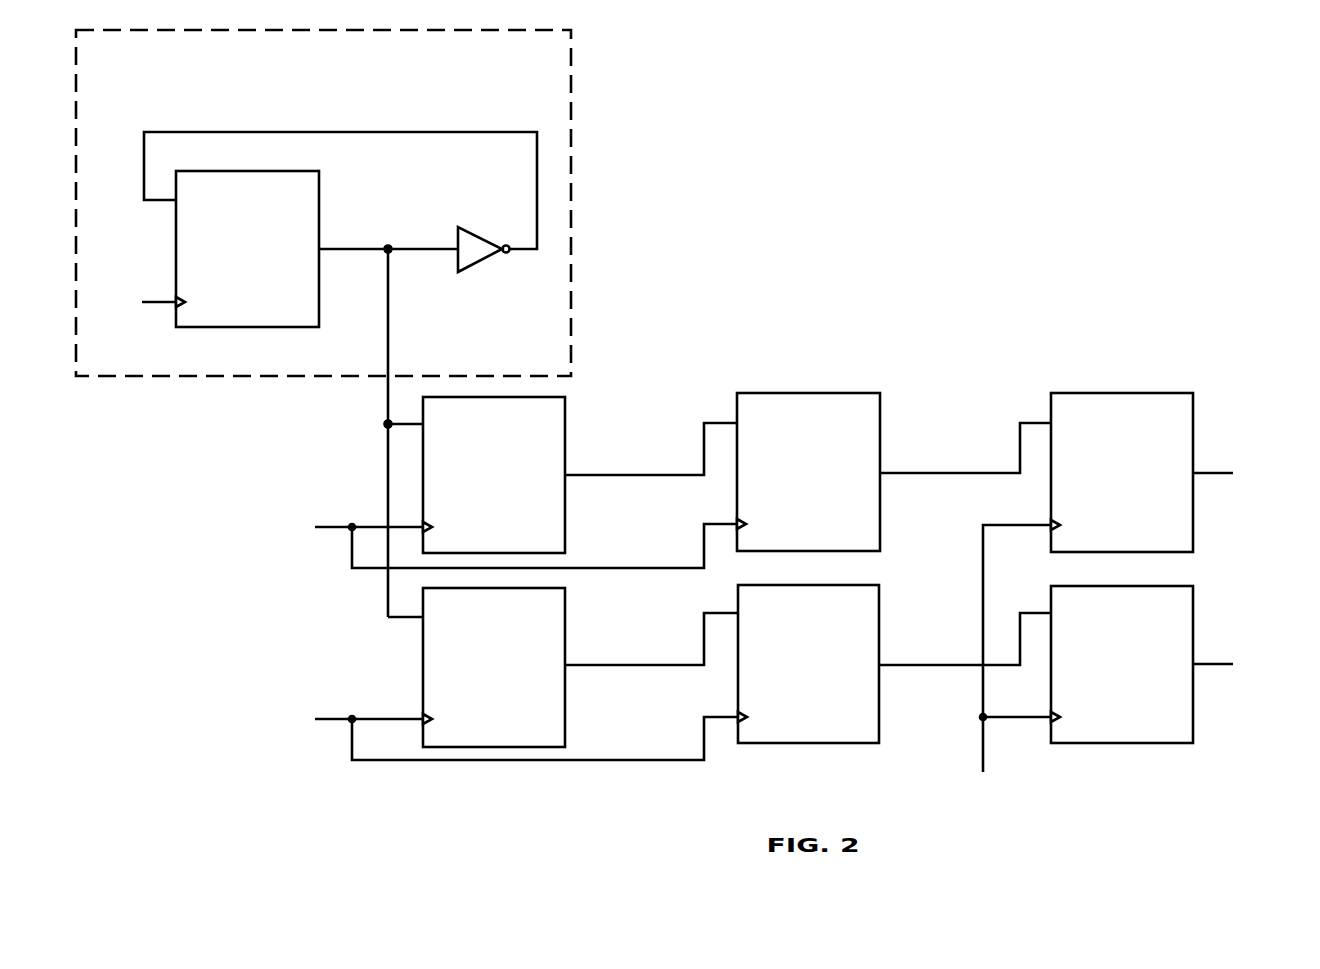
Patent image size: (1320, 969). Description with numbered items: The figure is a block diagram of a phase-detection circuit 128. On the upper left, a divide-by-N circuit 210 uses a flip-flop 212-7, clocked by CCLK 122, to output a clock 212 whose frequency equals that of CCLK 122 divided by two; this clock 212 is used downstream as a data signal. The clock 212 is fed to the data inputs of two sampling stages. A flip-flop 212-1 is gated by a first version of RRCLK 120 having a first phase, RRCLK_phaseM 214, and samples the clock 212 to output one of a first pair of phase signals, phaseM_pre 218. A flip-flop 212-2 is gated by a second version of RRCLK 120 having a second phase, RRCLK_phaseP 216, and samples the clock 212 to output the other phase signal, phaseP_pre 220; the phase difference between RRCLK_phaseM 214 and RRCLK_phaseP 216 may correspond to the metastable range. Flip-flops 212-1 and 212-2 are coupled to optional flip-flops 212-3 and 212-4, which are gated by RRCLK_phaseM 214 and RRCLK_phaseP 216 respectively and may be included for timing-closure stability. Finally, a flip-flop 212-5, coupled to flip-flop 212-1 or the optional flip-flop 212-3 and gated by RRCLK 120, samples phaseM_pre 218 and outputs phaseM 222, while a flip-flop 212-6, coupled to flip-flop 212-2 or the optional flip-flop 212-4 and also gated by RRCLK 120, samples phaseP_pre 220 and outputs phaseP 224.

The phase-detection circuit 128 is at (980, 210).
The divide-by-N circuit 210 is at (323, 203).
The flip-flop 212-7 is at (273, 272).
The CCLK 122 is at (133, 299).
The clock 212 is at (388, 357).
The flip-flop 212-1 is at (520, 497).
The flip-flop 212-2 is at (520, 688).
The optional flip-flop 212-3 is at (796, 506).
The optional flip-flop 212-4 is at (796, 701).
The flip-flop 212-5 is at (1147, 496).
The flip-flop 212-6 is at (1147, 689).
The RRCLK_phaseM 214 is at (451, 534).
The RRCLK_phaseP 216 is at (454, 726).
The phaseM_pre 218 is at (915, 473).
The phaseP_pre 220 is at (899, 665).
The phaseM 222 is at (1250, 466).
The phaseP 224 is at (1250, 655).
The RRCLK 120 is at (1001, 673).